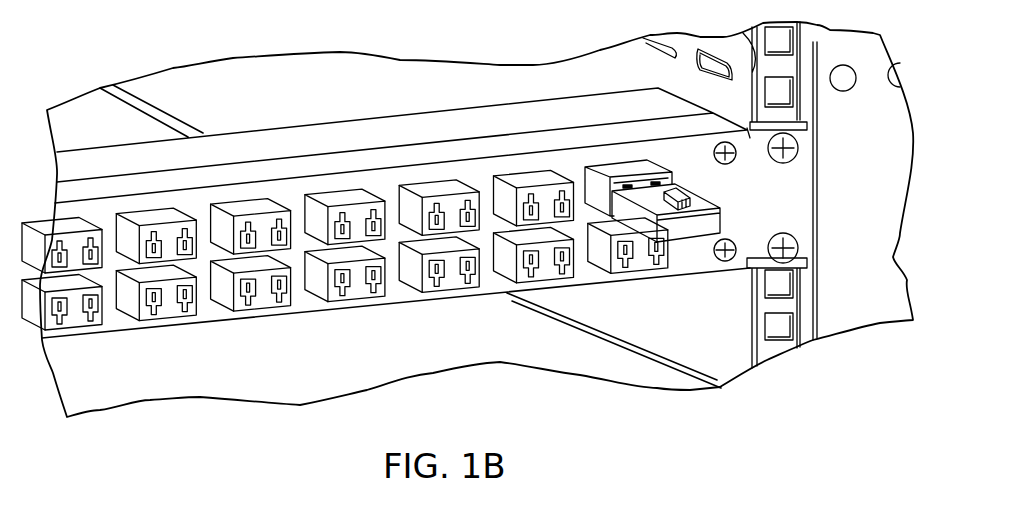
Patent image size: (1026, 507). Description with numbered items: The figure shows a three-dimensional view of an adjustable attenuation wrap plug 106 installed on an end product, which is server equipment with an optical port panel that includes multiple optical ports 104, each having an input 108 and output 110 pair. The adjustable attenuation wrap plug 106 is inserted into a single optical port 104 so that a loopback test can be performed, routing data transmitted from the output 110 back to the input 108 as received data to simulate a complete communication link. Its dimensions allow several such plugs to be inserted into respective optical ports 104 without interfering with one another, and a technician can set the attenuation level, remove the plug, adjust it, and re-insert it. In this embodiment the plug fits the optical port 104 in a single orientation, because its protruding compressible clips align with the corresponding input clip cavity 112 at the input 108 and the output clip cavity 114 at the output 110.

The optical port 104 is at (627, 167).
The adjustable attenuation wrap plug 106 is at (687, 230).
The input 108 is at (530, 220).
The output 110 is at (552, 219).
The input clip cavity 112 is at (533, 197).
The output clip cavity 114 is at (553, 197).